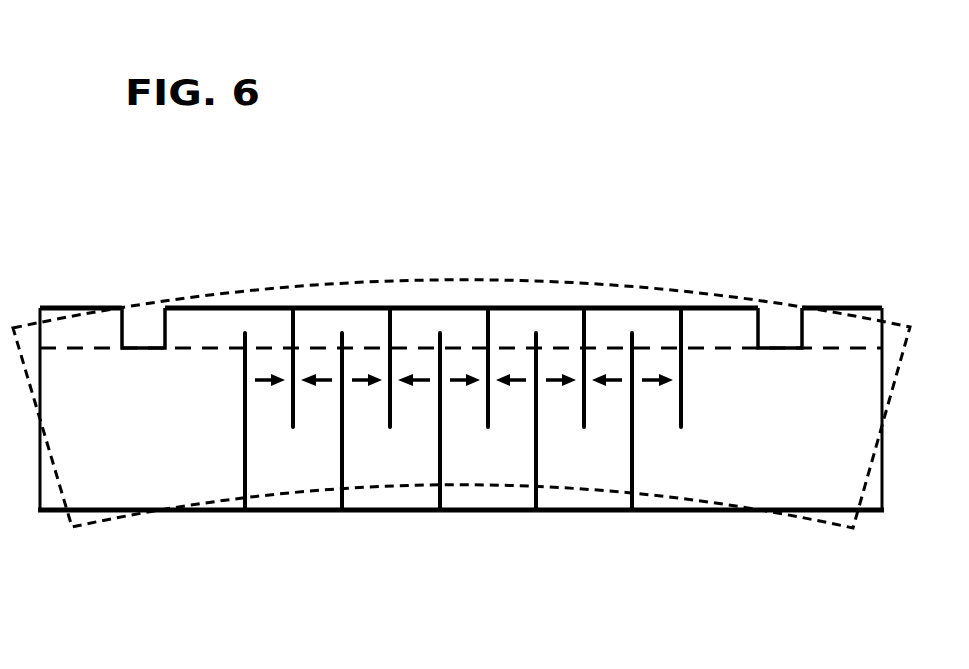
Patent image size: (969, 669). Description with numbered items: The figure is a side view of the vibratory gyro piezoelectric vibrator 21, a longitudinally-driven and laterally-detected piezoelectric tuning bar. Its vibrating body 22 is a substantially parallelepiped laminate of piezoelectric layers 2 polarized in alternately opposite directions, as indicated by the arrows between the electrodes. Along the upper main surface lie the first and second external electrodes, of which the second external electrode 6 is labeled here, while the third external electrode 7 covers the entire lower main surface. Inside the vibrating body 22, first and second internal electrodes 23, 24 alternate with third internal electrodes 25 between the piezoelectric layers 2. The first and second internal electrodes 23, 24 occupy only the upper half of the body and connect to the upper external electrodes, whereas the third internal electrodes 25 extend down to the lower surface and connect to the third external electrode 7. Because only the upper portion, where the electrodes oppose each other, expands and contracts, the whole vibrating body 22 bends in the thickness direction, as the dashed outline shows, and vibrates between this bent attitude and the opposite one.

The piezoelectric layer 2 is at (417, 410).
The second external electrode 6 is at (461, 249).
The third external electrode 7 is at (292, 513).
The vibratory gyro piezoelectric vibrator 21 is at (214, 284).
The vibrating body 22 is at (200, 477).
The first internal electrode 23 is at (490, 338).
The second internal electrode 24 is at (487, 296).
The third internal electrode 25 is at (440, 457).